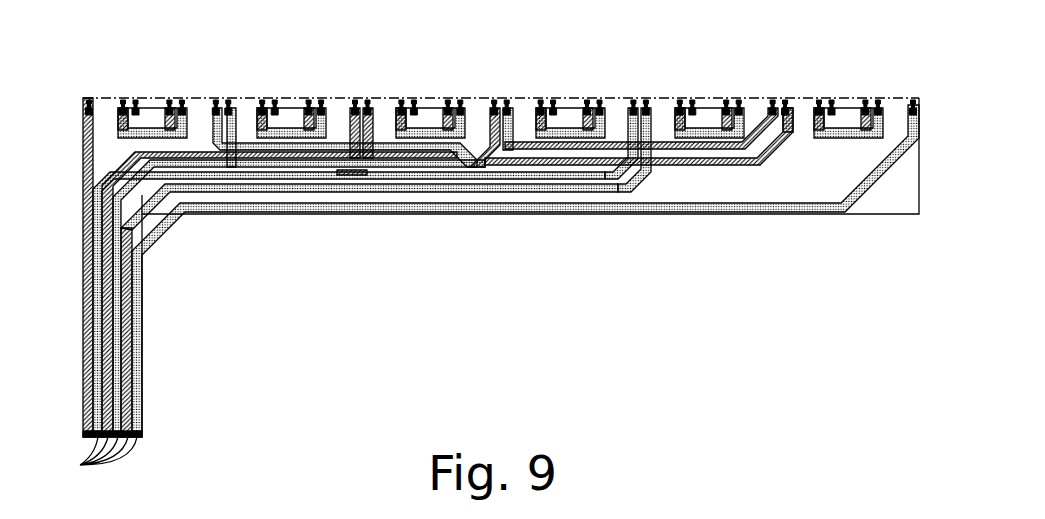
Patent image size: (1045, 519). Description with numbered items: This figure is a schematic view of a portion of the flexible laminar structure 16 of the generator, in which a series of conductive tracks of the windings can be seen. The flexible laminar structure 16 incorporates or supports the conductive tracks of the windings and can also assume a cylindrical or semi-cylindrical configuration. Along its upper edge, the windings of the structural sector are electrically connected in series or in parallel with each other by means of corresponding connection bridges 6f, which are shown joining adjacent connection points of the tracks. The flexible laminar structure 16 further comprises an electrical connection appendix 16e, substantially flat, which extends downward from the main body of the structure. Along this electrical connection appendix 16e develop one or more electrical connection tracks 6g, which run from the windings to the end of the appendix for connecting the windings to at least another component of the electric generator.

The connection bridge 6f is at (136, 103).
The flexible laminar structure 16 is at (902, 99).
The electrical connection appendix 16e is at (83, 360).
The electrical connection track 6g is at (78, 467).